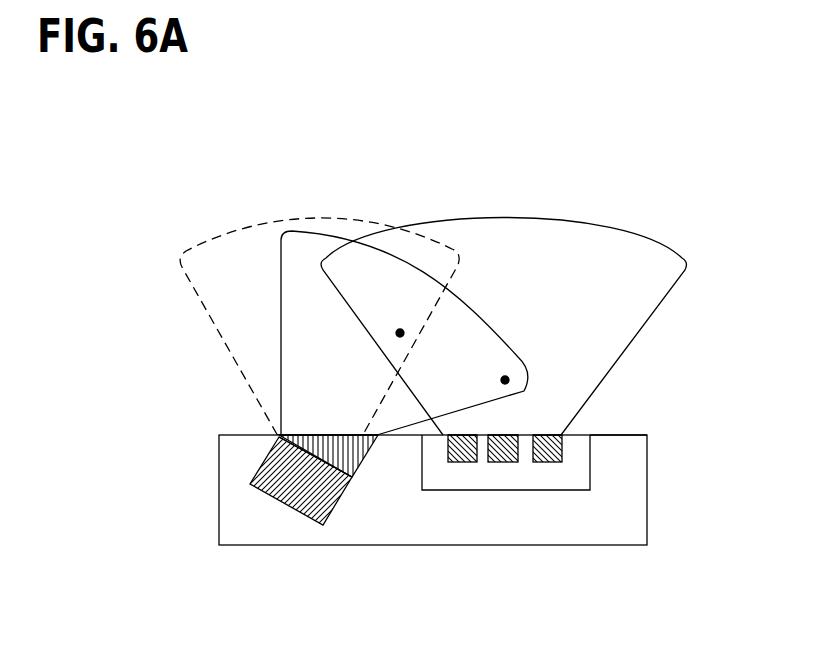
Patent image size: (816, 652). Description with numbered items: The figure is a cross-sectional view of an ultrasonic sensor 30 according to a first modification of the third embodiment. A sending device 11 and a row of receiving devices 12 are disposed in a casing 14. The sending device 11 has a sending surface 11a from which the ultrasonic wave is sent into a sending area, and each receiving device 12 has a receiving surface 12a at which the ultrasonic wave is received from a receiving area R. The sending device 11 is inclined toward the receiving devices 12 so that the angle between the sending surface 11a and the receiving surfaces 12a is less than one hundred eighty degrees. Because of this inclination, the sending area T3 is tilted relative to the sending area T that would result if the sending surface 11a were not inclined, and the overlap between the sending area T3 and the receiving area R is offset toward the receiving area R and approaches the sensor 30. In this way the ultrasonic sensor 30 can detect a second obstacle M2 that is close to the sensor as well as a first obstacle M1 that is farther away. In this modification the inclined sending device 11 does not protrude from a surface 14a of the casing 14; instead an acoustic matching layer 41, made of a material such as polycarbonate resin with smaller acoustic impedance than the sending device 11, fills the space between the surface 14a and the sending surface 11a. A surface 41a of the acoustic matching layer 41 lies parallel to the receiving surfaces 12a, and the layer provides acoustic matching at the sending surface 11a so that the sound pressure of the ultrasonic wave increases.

The ultrasonic sensor 30 is at (591, 127).
The sending device 11 is at (292, 492).
The sending surface 11a is at (302, 440).
The receiving devices 12 is at (506, 463).
The receiving surfaces 12a is at (503, 432).
The casing 14 is at (647, 485).
The surface of the casing 14a is at (618, 435).
The acoustic matching layer 41 is at (338, 456).
The surface of the acoustic matching layer 41a is at (350, 437).
The sending area T is at (226, 229).
The sending area T3 is at (422, 268).
The receiving area R is at (608, 225).
The first obstacle M1 is at (400, 333).
The second obstacle M2 is at (505, 380).